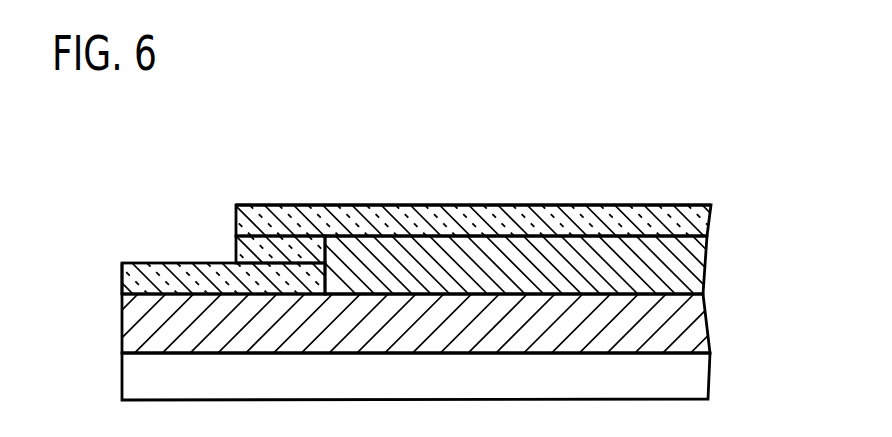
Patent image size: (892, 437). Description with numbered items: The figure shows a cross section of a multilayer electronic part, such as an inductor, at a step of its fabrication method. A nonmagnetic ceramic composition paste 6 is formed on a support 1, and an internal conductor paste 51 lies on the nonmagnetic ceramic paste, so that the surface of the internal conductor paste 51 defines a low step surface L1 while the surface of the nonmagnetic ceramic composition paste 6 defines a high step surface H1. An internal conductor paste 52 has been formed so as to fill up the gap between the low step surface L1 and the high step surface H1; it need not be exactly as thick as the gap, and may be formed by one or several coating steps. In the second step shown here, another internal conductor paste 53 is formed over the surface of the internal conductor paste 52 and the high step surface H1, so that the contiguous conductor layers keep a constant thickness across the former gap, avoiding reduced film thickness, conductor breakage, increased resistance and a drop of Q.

The support 1 is at (700, 377).
The nonmagnetic ceramic composition paste 6 is at (690, 268).
The internal conductor paste 51 is at (120, 290).
The internal conductor paste 52 is at (238, 244).
The internal conductor paste 53 is at (263, 220).
The low step surface L1 is at (166, 263).
The high step surface H1 is at (517, 232).